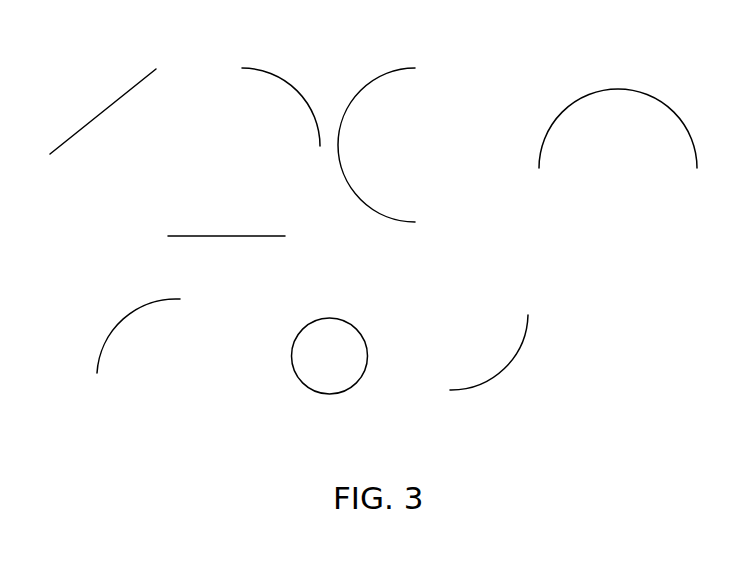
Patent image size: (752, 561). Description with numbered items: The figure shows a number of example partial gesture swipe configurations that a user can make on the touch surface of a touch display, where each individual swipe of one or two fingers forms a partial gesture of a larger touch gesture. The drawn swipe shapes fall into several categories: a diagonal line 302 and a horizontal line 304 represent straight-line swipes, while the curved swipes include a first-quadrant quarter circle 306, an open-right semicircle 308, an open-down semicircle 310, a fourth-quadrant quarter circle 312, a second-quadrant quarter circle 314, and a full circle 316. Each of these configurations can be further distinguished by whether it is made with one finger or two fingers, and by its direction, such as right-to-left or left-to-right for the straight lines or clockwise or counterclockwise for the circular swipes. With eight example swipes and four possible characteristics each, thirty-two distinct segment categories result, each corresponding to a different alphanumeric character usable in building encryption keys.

The diagonal line 302 is at (102, 83).
The horizontal line 304 is at (176, 204).
The first-quadrant quarter circle 306 is at (264, 115).
The open-right semicircle 308 is at (355, 62).
The open-down semicircle 310 is at (622, 71).
The fourth-quadrant quarter circle 312 is at (508, 333).
The second-quadrant quarter circle 314 is at (120, 296).
The full circle 316 is at (306, 422).